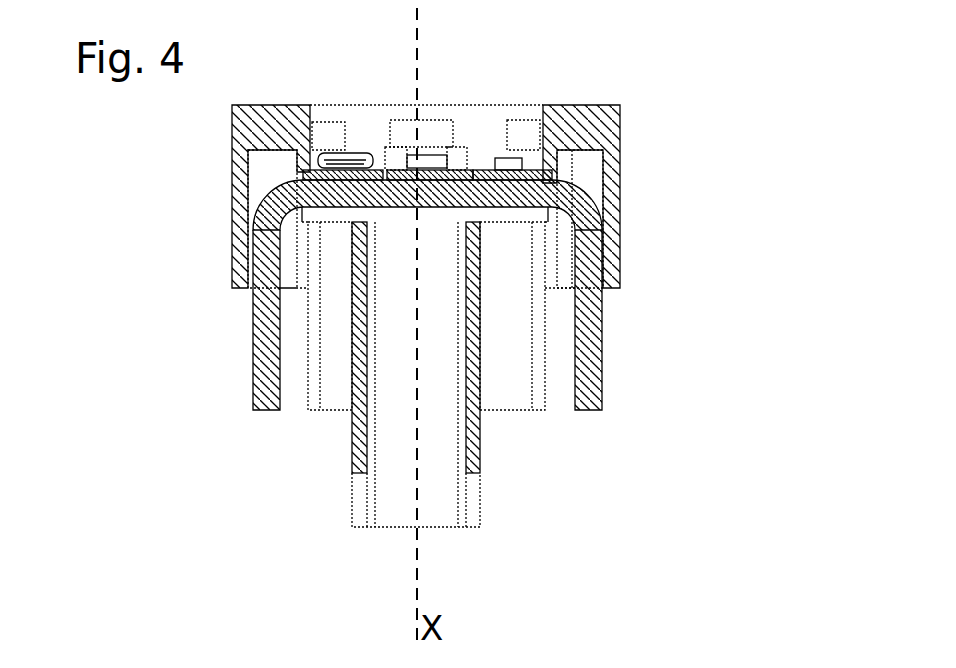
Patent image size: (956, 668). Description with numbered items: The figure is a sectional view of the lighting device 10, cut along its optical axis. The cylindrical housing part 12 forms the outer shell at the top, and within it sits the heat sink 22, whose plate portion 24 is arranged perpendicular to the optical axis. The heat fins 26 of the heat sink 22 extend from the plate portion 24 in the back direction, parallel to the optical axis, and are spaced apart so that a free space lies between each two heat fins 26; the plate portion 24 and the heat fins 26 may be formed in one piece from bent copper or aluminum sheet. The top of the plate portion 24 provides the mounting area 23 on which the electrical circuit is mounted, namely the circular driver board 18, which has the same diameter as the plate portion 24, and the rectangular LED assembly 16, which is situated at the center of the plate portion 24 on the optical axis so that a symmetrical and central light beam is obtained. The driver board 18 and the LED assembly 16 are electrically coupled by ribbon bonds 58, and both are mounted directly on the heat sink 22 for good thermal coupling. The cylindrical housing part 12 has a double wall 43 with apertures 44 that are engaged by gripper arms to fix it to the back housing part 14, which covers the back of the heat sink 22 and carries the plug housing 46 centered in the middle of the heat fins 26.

The lighting device 10 is at (650, 99).
The cylindrical housing part 12 is at (598, 128).
The back housing part 14 is at (330, 438).
The LED assembly 16 is at (444, 121).
The driver board 18 is at (373, 146).
The heat sink 22 is at (622, 364).
The mounting area 23 is at (532, 176).
The plate portion 24 is at (515, 195).
The heat fins 26 is at (592, 318).
The double wall 43 is at (365, 127).
The apertures 44 is at (327, 133).
The plug housing 46 is at (357, 470).
The ribbon bonds 58 is at (385, 157).